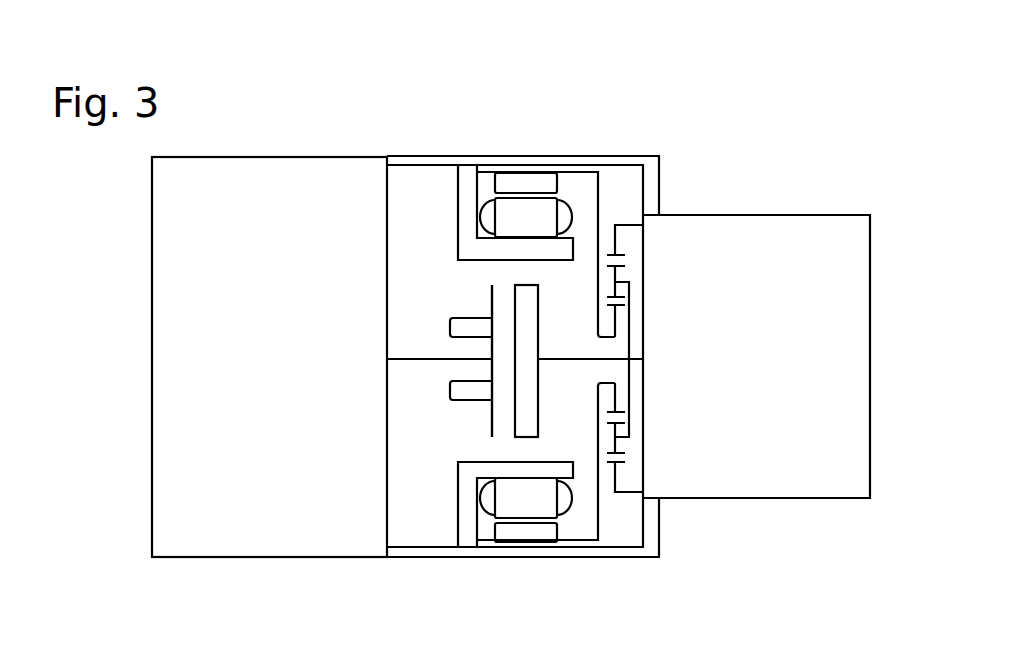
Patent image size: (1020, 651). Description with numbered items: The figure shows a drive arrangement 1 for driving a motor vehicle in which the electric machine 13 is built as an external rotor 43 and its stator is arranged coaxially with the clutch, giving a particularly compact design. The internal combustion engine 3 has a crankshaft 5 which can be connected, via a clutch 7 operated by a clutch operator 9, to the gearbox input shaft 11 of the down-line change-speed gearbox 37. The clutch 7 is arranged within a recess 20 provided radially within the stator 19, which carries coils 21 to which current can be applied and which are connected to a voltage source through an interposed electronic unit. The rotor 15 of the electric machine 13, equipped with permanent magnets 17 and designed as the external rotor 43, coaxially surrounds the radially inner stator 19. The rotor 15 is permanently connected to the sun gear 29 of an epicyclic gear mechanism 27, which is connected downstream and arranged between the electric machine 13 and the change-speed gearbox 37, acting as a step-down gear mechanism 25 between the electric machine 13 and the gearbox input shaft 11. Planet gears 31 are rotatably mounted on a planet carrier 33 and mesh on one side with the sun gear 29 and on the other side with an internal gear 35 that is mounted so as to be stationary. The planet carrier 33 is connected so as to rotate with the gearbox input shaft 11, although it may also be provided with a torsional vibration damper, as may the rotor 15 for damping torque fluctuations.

The drive arrangement 1 is at (202, 130).
The internal combustion engine 3 is at (175, 530).
The crankshaft 5 is at (405, 362).
The clutch 7 is at (518, 443).
The clutch operator 9 is at (460, 389).
The gearbox input shaft 11 is at (608, 361).
The electric machine 13 is at (569, 519).
The rotor 15 is at (525, 533).
The permanent magnets 17 is at (520, 187).
The stator 19 is at (482, 520).
The recess 20 is at (528, 443).
The coils 21 is at (478, 504).
The step-down gear mechanism 25 is at (621, 212).
The epicyclic gear mechanism 27 is at (624, 502).
The sun gear 29 is at (619, 322).
The planet gears 31 is at (626, 240).
The planet carrier 33 is at (646, 295).
The internal gear 35 is at (631, 212).
The change-speed gearbox 37 is at (795, 468).
The external rotor 43 is at (478, 176).